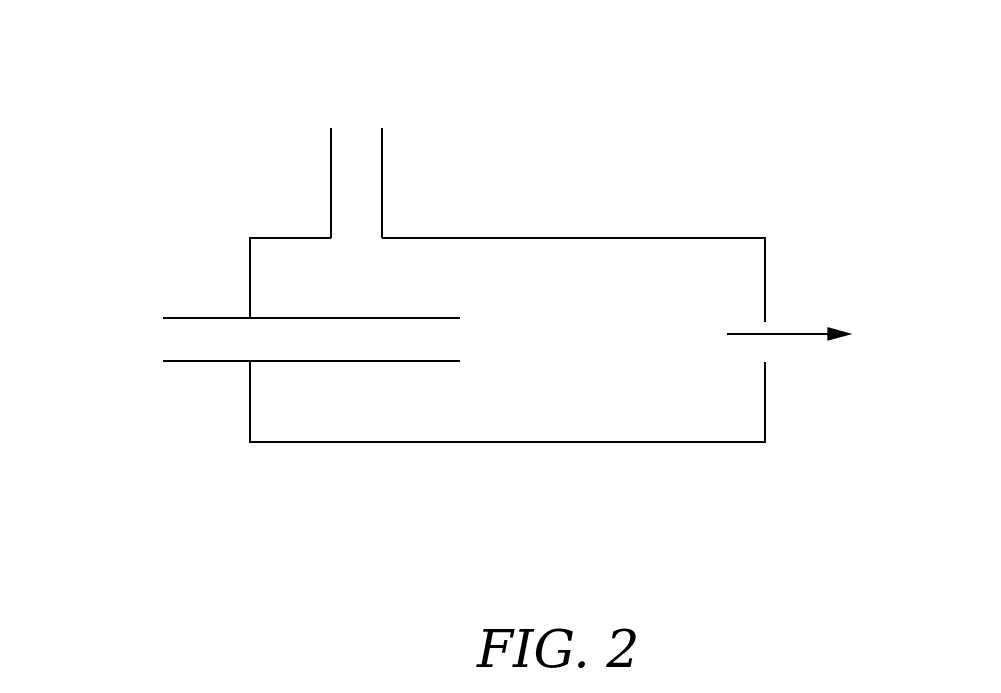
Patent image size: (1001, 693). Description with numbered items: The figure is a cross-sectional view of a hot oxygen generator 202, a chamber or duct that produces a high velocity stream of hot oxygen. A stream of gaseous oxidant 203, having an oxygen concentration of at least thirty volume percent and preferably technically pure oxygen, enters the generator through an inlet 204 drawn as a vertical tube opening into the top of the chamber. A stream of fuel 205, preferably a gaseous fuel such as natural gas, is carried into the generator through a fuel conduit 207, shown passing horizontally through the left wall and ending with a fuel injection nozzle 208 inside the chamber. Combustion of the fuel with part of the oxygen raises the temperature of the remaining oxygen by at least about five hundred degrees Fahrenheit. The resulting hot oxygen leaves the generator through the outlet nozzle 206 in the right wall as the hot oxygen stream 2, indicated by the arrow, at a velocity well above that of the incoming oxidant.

The hot oxygen stream 2 is at (793, 330).
The hot oxygen generator 202 is at (492, 442).
The stream of gaseous oxidant 203 is at (353, 135).
The inlet 204 is at (382, 175).
The stream of fuel 205 is at (178, 338).
The outlet nozzle 206 is at (766, 362).
The fuel conduit 207 is at (208, 363).
The nozzle 208 is at (453, 338).